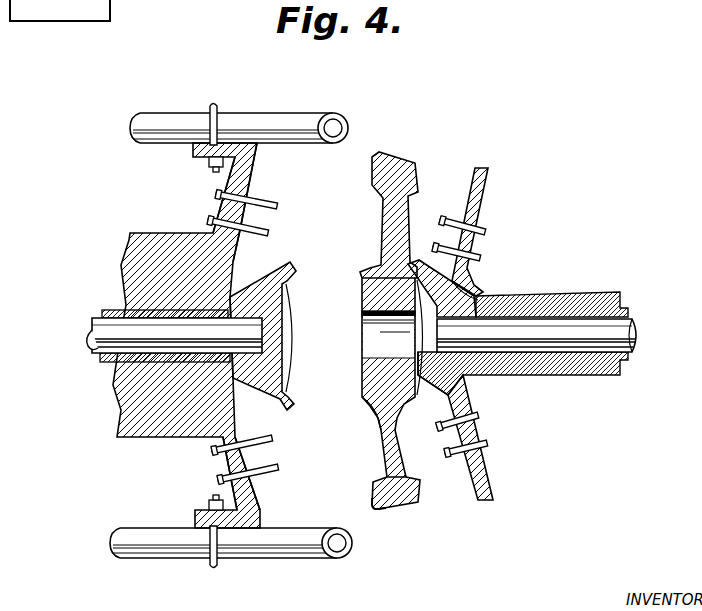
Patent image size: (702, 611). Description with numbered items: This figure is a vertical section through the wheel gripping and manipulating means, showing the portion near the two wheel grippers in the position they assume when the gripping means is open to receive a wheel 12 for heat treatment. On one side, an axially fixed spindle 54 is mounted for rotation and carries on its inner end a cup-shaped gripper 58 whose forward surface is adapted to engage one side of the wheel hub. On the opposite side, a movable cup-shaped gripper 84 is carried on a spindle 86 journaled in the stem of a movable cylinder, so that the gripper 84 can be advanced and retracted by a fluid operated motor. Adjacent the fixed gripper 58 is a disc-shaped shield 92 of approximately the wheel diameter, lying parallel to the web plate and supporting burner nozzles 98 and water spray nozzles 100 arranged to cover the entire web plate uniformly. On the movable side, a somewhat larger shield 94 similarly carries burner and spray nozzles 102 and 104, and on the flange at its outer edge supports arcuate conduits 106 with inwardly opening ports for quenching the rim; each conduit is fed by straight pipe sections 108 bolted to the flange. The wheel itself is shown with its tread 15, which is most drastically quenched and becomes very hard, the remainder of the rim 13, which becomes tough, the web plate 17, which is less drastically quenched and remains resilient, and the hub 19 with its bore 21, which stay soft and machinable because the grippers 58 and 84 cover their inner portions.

The wheel 12 is at (417, 200).
The rim 13 is at (420, 493).
The tread 15 is at (398, 508).
The web plate 17 is at (380, 437).
The hub 19 is at (373, 377).
The bore 21 is at (373, 352).
The spindle 54 is at (602, 345).
The cup-shaped gripper 58 is at (450, 365).
The movable cup-shaped gripper 84 is at (277, 437).
The spindle 86 is at (95, 340).
The shield 92 is at (478, 203).
The shield 94 is at (246, 184).
The burner nozzles 98 is at (447, 226).
The water spray nozzles 100 is at (481, 258).
The burner nozzles 102 is at (263, 228).
The spray nozzles 104 is at (215, 195).
The arcuate conduits 106 is at (340, 112).
The straight pipe sections 108 is at (175, 122).